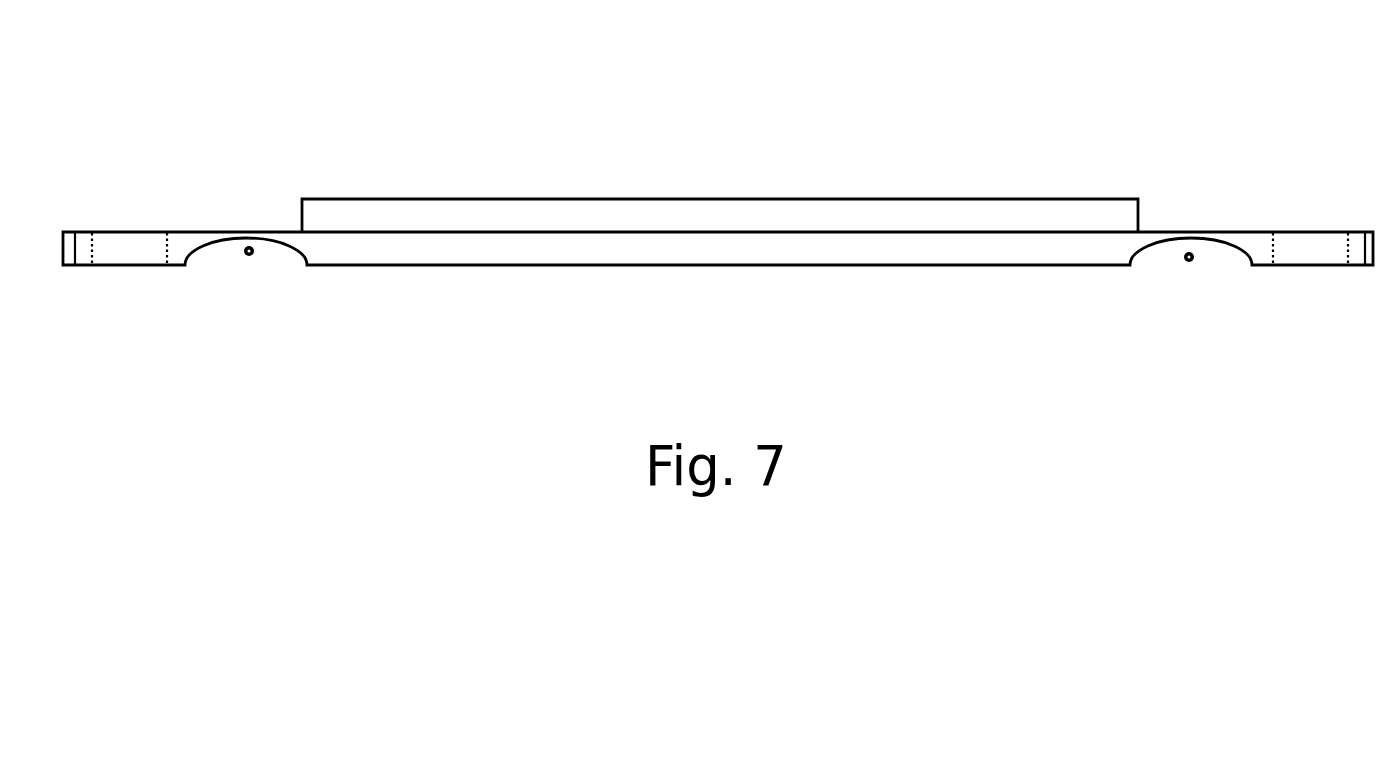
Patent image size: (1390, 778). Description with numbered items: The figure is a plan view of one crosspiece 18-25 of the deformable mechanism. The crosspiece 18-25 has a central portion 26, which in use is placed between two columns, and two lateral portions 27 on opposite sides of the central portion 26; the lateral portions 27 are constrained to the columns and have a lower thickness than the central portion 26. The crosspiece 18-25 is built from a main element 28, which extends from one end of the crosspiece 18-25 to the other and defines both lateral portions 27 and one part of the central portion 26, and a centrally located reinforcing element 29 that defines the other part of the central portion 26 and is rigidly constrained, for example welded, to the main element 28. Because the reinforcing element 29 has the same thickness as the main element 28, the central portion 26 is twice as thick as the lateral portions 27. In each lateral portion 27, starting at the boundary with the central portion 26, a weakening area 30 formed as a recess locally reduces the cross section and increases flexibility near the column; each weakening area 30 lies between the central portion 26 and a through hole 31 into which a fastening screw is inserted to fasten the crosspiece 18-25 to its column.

The crosspiece 18-25 is at (965, 395).
The central portion 26 is at (697, 131).
The lateral portion 27 is at (153, 190).
The main element 28 is at (712, 252).
The reinforcing element 29 is at (489, 215).
The weakening area 30 is at (248, 258).
The through hole 31 is at (128, 250).